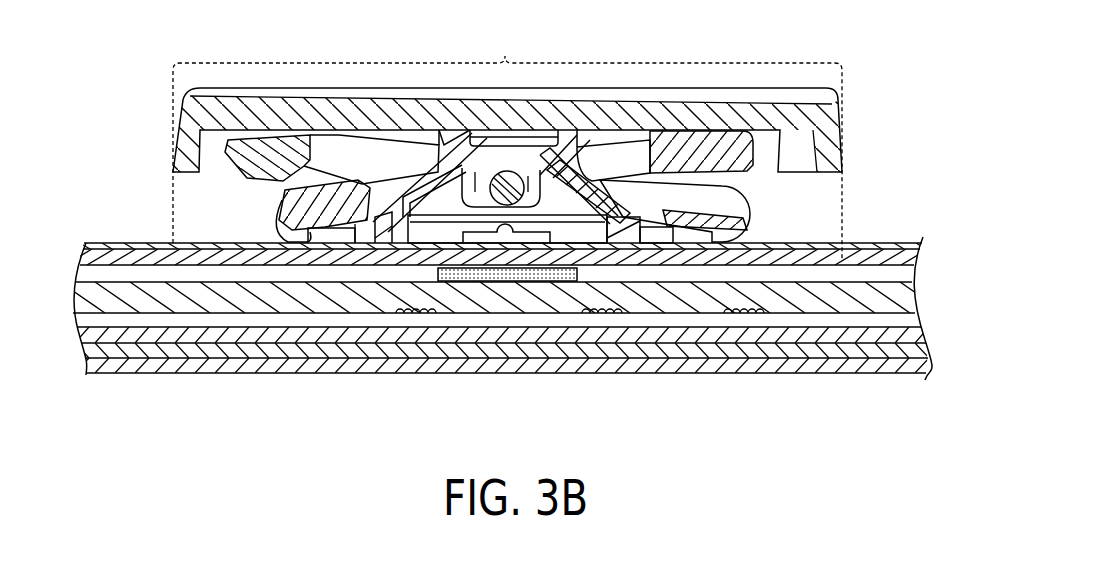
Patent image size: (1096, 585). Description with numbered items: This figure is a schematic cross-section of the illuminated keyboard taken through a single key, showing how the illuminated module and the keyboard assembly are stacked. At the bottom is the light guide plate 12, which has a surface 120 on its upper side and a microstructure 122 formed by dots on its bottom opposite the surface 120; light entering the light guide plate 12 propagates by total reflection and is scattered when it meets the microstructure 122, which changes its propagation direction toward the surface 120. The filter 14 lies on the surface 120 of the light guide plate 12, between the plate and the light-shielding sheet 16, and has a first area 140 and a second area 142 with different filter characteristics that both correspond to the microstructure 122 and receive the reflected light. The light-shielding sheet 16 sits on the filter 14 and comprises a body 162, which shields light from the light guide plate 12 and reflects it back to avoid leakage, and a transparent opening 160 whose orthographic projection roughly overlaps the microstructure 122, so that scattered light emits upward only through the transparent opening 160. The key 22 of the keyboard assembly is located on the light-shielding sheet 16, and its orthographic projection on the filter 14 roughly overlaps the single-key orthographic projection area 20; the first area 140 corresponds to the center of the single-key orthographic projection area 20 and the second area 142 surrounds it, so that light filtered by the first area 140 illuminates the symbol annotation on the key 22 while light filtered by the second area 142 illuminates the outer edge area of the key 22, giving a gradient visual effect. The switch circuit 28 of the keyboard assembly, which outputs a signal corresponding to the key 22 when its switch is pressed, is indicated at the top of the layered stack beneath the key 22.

The light guide plate 12 is at (500, 371).
The surface 120 is at (857, 276).
The microstructure 122 is at (762, 315).
The filter 14 is at (494, 370).
The first area 140 is at (460, 281).
The second area 142 is at (373, 272).
The light-shielding sheet 16 is at (898, 258).
The transparent opening 160 is at (612, 262).
The body 162 is at (675, 250).
The single-key orthographic projection area 20 is at (538, 145).
The key 22 is at (838, 130).
The switch circuit 28 is at (868, 245).